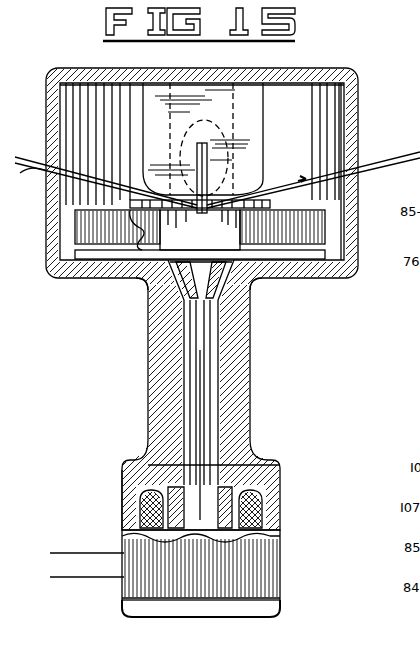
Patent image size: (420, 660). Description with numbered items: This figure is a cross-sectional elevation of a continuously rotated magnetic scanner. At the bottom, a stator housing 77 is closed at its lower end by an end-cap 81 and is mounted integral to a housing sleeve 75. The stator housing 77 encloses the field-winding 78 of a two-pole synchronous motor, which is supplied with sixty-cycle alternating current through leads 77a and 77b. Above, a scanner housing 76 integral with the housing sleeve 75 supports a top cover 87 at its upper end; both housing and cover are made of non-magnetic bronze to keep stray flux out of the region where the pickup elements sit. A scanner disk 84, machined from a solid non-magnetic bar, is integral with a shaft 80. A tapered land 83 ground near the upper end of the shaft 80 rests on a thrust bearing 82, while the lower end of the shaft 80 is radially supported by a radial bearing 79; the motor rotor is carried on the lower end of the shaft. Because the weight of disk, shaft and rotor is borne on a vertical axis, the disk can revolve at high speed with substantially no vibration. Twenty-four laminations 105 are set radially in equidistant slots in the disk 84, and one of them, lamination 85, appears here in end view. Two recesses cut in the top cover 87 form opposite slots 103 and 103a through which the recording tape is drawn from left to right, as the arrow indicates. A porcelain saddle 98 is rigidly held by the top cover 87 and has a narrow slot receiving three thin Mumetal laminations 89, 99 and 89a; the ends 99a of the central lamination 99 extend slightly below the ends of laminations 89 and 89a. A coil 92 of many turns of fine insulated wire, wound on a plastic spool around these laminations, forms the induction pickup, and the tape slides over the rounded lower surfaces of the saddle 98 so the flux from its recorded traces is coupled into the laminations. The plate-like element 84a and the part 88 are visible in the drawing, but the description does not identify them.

The housing sleeve 75 is at (252, 362).
The scanner housing 76 is at (50, 221).
The stator housing 77 is at (124, 526).
The lead 77a is at (100, 552).
The lead 77b is at (98, 580).
The field-winding 78 is at (268, 518).
The radial bearing 79 is at (150, 466).
The shaft 80 is at (210, 413).
The end-cap 81 is at (262, 612).
The thrust bearing 82 is at (230, 272).
The tapered land 83 is at (226, 296).
The scanner disk 84 is at (310, 246).
The toothed plate 84a is at (268, 205).
The lamination 85 is at (204, 222).
The top cover 87 is at (348, 122).
The spring wire 88 is at (46, 162).
The lamination 89 is at (214, 160).
The lamination 89a is at (176, 164).
The coil 92 is at (240, 75).
The saddle 98 is at (218, 95).
The lamination 99 is at (192, 150).
The lamination end 99a is at (210, 218).
The slot 103 is at (344, 166).
The slot 103a is at (52, 172).
The laminations 105 is at (130, 276).